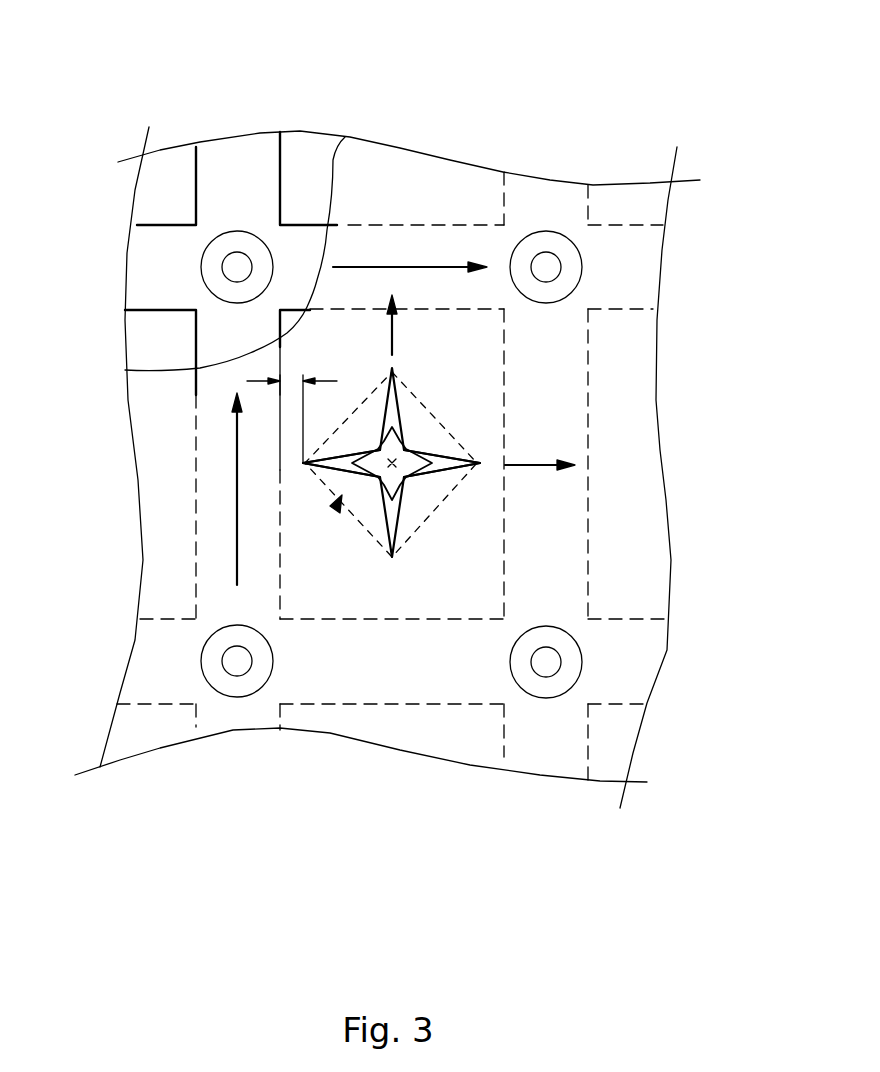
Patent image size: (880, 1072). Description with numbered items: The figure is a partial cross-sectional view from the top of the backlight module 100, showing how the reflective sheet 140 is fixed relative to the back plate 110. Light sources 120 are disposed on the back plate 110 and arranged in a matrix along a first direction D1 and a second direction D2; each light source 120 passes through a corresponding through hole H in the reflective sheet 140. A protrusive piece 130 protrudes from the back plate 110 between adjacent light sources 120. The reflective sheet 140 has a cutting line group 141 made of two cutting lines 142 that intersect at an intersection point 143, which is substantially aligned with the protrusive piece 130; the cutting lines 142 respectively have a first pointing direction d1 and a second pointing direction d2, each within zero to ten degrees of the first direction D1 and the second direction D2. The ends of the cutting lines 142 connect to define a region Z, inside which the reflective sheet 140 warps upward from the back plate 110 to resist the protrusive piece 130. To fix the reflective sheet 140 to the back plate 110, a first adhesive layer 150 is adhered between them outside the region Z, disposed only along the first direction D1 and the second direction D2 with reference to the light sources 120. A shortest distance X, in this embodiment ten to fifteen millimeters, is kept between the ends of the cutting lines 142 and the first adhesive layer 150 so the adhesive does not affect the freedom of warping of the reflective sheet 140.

The backlight module 100 is at (48, 45).
The back plate 110 is at (392, 513).
The light source 120 is at (573, 668).
The protrusive piece 130 is at (413, 465).
The reflective sheet 140 is at (377, 717).
The cutting line group 141 is at (438, 867).
The cutting line 142 is at (403, 520).
The intersection point 143 is at (393, 453).
The first adhesive layer 150 is at (302, 242).
The through hole H is at (577, 636).
The shortest distance X is at (292, 380).
The region Z is at (337, 503).
The first direction D1 is at (237, 468).
The second direction D2 is at (373, 255).
The first pointing direction d1 is at (395, 333).
The second pointing direction d2 is at (533, 463).